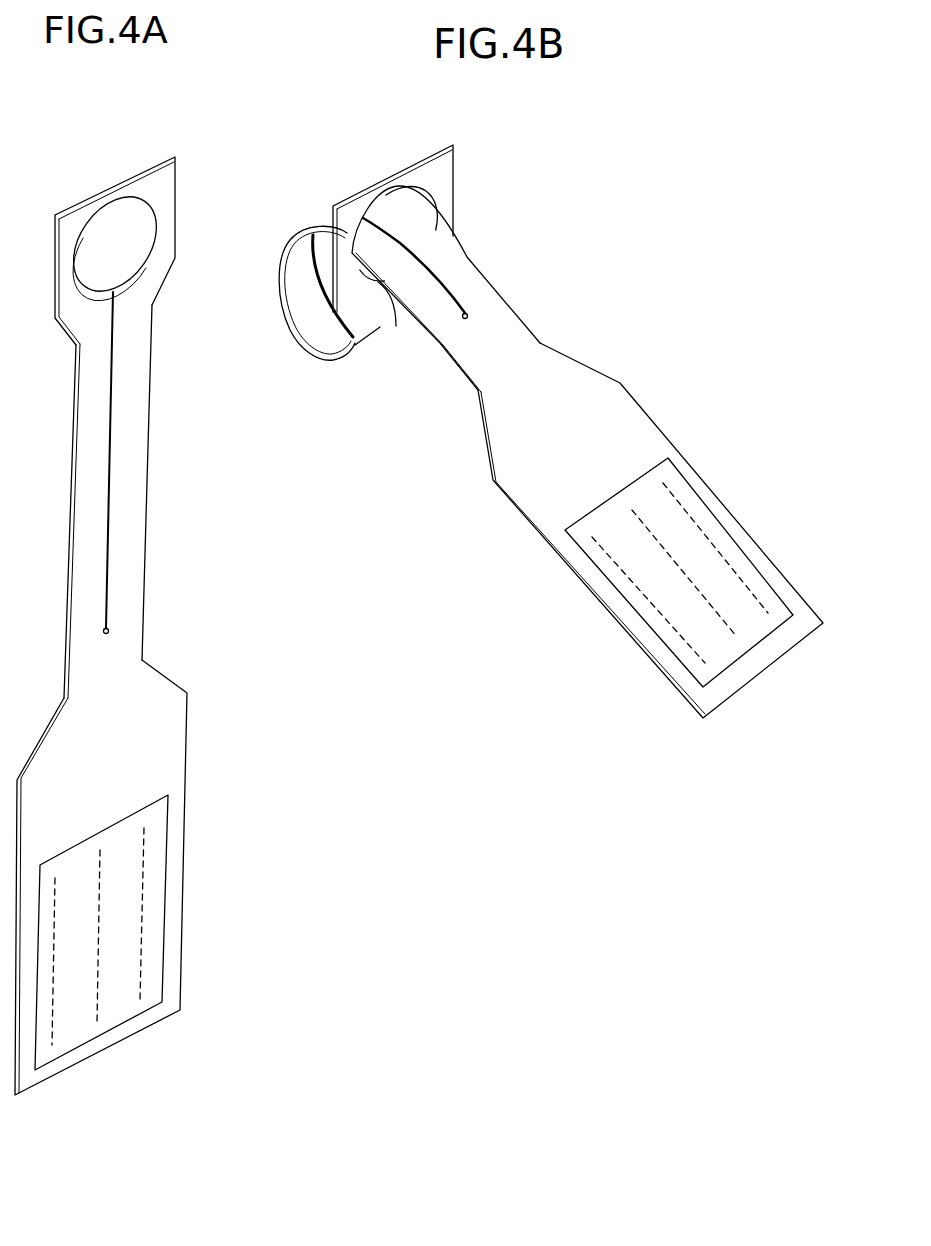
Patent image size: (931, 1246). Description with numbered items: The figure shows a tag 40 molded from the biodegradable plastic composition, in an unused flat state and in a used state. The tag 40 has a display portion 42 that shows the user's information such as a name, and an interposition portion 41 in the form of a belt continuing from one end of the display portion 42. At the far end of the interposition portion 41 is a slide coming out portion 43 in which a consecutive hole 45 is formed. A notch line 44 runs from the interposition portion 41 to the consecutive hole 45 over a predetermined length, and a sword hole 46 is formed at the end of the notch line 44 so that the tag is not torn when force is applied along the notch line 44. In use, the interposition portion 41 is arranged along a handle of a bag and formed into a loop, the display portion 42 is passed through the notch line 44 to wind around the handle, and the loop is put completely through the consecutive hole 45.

In FIG. 4A, the tag 40 is at (150, 603).
In FIG. 4B, the tag 40 is at (551, 411).
In FIG. 4A, the interposition portion 41 is at (150, 408).
In FIG. 4B, the interposition portion 41 is at (445, 360).
In FIG. 4A, the display portion 42 is at (152, 757).
In FIG. 4B, the display portion 42 is at (625, 430).
In FIG. 4A, the slide coming out portion 43 is at (142, 228).
In FIG. 4B, the slide coming out portion 43 is at (427, 224).
In FIG. 4A, the notch line 44 is at (109, 507).
In FIG. 4B, the notch line 44 is at (438, 260).
In FIG. 4A, the consecutive hole 45 is at (127, 240).
In FIG. 4B, the consecutive hole 45 is at (417, 198).
In FIG. 4A, the sword hole 46 is at (109, 632).
In FIG. 4B, the sword hole 46 is at (473, 307).